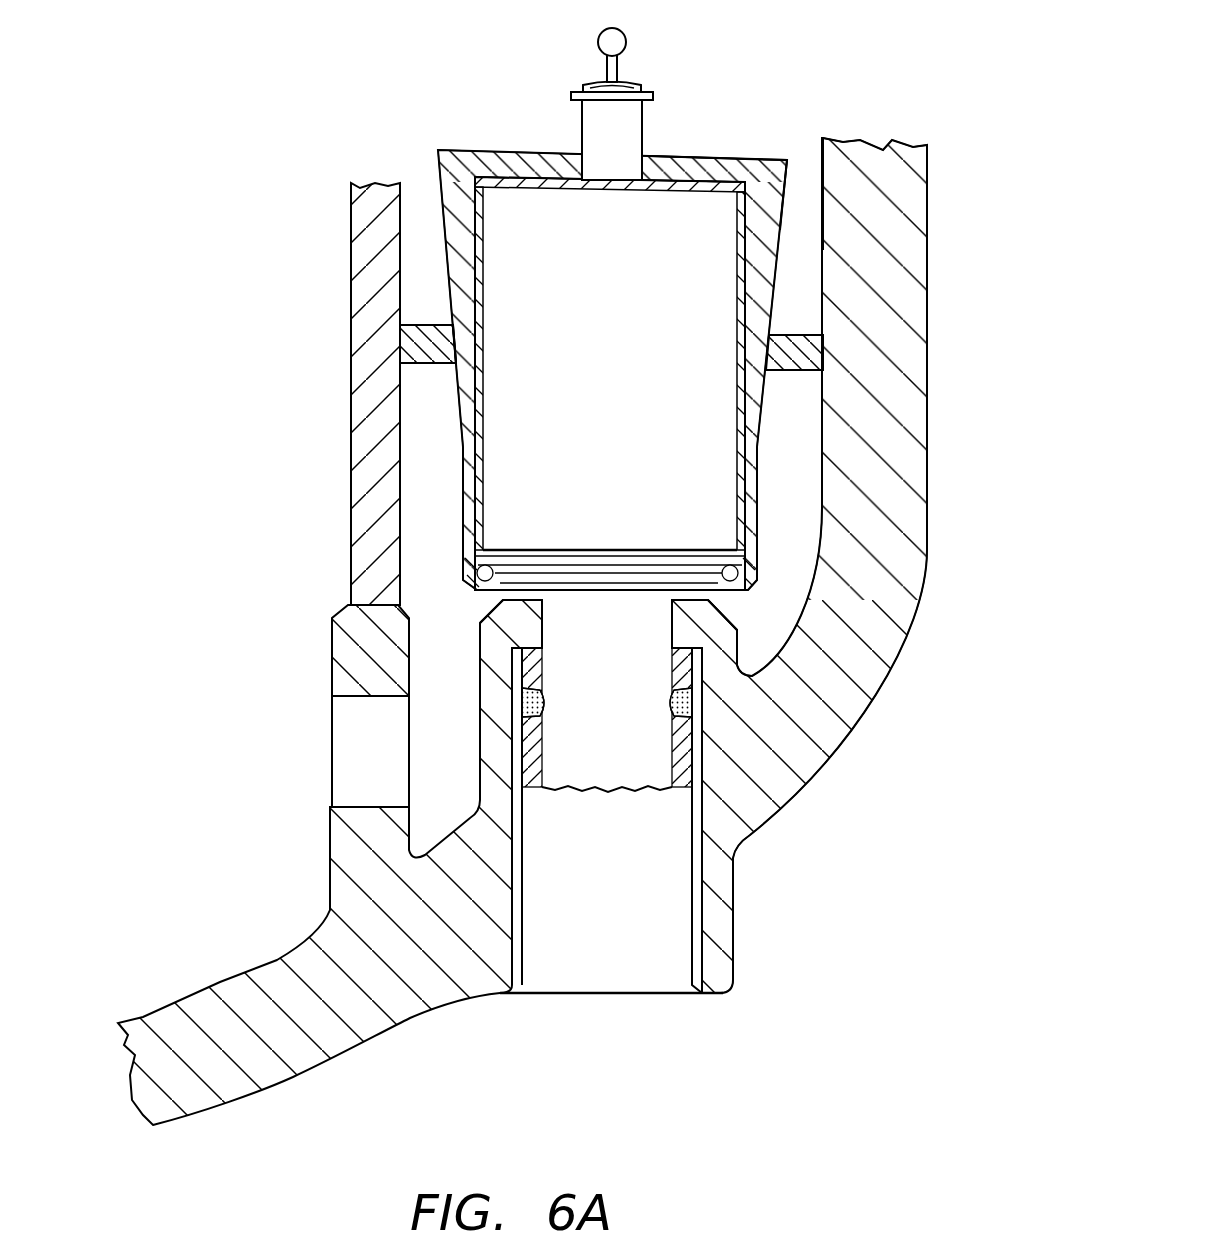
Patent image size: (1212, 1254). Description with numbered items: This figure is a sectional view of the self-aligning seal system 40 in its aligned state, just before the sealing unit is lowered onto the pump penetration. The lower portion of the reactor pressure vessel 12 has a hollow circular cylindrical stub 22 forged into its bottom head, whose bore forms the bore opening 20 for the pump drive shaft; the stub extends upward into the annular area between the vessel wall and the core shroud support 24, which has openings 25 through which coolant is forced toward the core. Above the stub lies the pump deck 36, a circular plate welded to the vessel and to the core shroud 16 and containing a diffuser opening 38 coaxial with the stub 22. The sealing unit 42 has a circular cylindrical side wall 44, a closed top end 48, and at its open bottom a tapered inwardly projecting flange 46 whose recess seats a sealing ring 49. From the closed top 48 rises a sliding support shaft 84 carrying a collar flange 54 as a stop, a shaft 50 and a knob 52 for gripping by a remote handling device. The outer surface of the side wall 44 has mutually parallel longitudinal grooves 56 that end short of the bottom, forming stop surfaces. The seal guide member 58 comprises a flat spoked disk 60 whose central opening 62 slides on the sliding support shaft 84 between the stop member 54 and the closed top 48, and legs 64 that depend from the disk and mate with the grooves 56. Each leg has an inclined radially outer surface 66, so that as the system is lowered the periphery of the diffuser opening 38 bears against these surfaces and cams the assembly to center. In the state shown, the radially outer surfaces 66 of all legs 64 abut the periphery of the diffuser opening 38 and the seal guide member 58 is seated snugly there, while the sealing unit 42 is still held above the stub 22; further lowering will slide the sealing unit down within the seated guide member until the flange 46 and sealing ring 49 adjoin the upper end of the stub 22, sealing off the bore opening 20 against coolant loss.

The reactor pressure vessel 12 is at (927, 318).
The core shroud 16 is at (351, 232).
The bore opening 20 is at (700, 950).
The stub 22 is at (715, 632).
The core shroud support 24 is at (345, 628).
The openings 25 is at (383, 697).
The pump deck 36 is at (425, 325).
The diffuser opening 38 is at (455, 343).
The seal system 40 is at (418, 136).
The sealing unit 42 is at (758, 493).
The side wall 44 is at (483, 465).
The flange 46 is at (489, 565).
The closed top end 48 is at (547, 190).
The sealing ring 49 is at (745, 578).
The shaft 50 is at (604, 72).
The knob 52 is at (623, 35).
The collar flange 54 is at (571, 97).
The longitudinal grooves 56 is at (477, 307).
The seal guide member 58 is at (797, 168).
The disk 60 is at (748, 158).
The central opening 62 is at (667, 165).
The legs 64 is at (765, 242).
The radially outer surfaces 66 is at (777, 292).
The sliding support shaft 84 is at (645, 127).